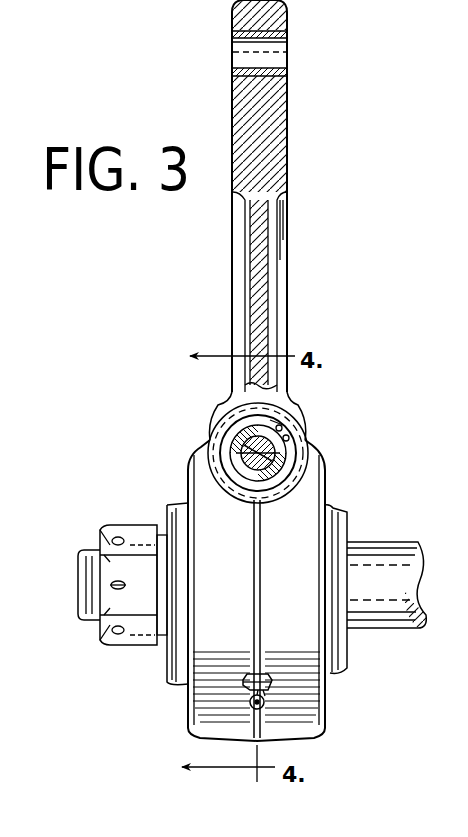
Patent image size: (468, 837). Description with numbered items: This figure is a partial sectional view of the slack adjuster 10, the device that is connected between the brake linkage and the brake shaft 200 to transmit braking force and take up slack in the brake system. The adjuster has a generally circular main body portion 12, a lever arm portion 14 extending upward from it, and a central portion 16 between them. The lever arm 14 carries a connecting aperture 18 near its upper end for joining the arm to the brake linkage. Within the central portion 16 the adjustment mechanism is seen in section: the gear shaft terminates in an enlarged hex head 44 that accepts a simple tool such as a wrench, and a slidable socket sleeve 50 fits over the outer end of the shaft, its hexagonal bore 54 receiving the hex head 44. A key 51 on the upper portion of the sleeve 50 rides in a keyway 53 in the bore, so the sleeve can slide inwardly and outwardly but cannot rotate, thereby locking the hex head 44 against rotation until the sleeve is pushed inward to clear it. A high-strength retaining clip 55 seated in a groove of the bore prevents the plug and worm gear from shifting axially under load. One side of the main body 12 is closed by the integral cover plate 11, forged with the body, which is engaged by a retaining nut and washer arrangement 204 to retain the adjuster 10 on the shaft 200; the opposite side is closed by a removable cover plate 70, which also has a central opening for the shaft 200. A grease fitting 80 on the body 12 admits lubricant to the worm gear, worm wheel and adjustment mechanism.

The slack adjuster 10 is at (293, 277).
The integral cover plate 11 is at (345, 668).
The main body portion 12 is at (467, 2).
The lever arm portion 14 is at (287, 131).
The central portion 16 is at (215, 420).
The connecting aperture 18 is at (233, 62).
The hex head 44 is at (303, 470).
The socket sleeve 50 is at (247, 458).
The key 51 is at (290, 430).
The keyway 53 is at (250, 420).
The 12-point hexagonal bore 54 is at (243, 449).
The retaining clip 55 is at (232, 440).
The removable cover plate 70 is at (180, 505).
The grease fitting 80 is at (270, 703).
The brake shaft 200 is at (380, 616).
The retaining nut and washer arrangement 204 is at (108, 535).